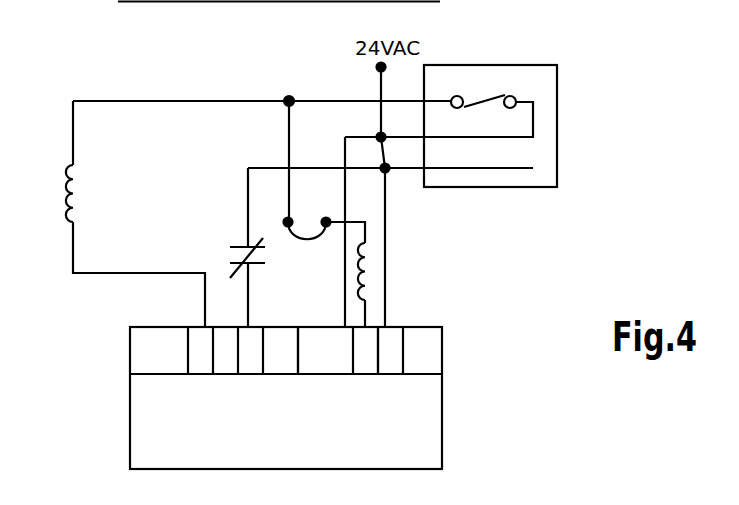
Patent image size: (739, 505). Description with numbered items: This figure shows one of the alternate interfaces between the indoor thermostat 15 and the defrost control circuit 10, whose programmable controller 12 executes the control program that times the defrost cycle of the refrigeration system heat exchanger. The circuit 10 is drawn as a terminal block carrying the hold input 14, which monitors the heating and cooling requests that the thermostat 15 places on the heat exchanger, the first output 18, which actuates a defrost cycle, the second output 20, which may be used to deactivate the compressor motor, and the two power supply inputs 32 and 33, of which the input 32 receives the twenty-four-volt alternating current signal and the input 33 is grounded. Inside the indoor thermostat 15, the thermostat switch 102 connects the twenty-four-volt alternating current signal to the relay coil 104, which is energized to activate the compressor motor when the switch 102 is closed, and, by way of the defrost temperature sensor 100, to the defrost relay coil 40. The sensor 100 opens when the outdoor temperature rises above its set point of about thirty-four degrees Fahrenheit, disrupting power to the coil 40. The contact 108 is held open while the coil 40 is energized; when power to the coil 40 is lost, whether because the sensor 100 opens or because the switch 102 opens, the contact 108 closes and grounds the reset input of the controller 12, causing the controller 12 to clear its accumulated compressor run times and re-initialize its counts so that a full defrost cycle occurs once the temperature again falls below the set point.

The defrost control circuit 10 is at (270, 398).
The programmable controller 12 is at (410, 446).
The input 14 is at (281, 362).
The indoor thermostat 15 is at (534, 122).
The first output 18 is at (363, 367).
The second output 20 is at (202, 362).
The alternating current input 32 is at (326, 360).
The input 33 is at (390, 355).
The relay coil 40 is at (361, 263).
The defrost temperature sensor 100 is at (305, 240).
The thermostat switch 102 is at (482, 99).
The relay coil 104 is at (78, 191).
The contact 108 is at (231, 258).